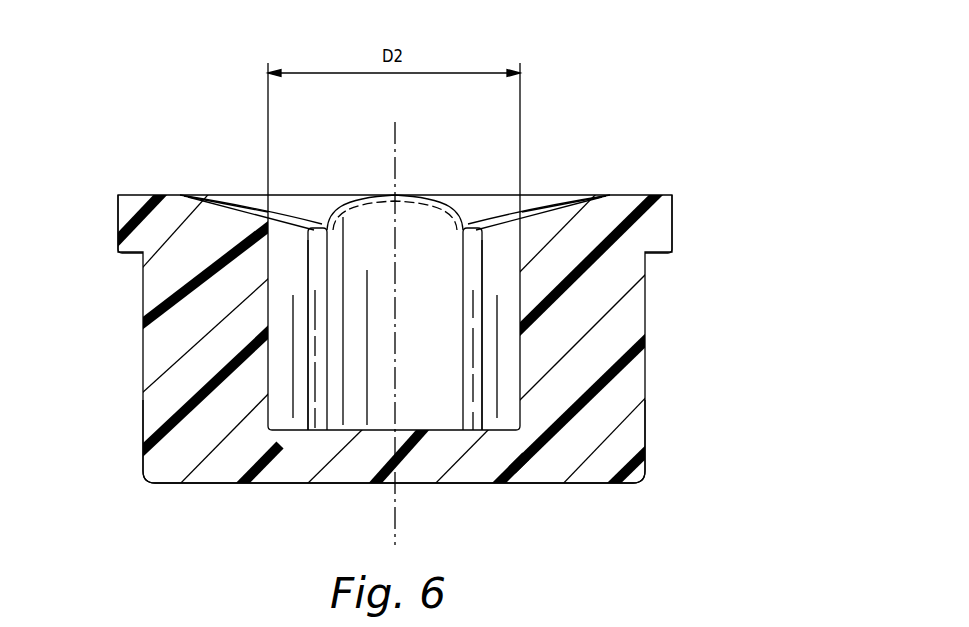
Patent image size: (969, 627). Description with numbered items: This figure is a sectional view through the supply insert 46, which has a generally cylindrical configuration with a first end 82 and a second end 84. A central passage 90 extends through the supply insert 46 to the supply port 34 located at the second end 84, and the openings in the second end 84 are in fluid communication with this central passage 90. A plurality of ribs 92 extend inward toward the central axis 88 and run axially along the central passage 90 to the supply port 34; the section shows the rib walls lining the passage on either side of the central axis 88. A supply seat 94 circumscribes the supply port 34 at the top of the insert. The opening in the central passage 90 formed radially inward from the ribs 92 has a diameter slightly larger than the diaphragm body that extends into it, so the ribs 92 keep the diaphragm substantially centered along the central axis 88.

The supply port 34 is at (428, 182).
The supply insert 46 is at (680, 135).
The first end 82 is at (230, 180).
The second end 84 is at (280, 497).
The central axis 88 is at (393, 156).
The central passage 90 is at (434, 306).
The ribs 92 is at (320, 365).
The supply seat 94 is at (130, 195).